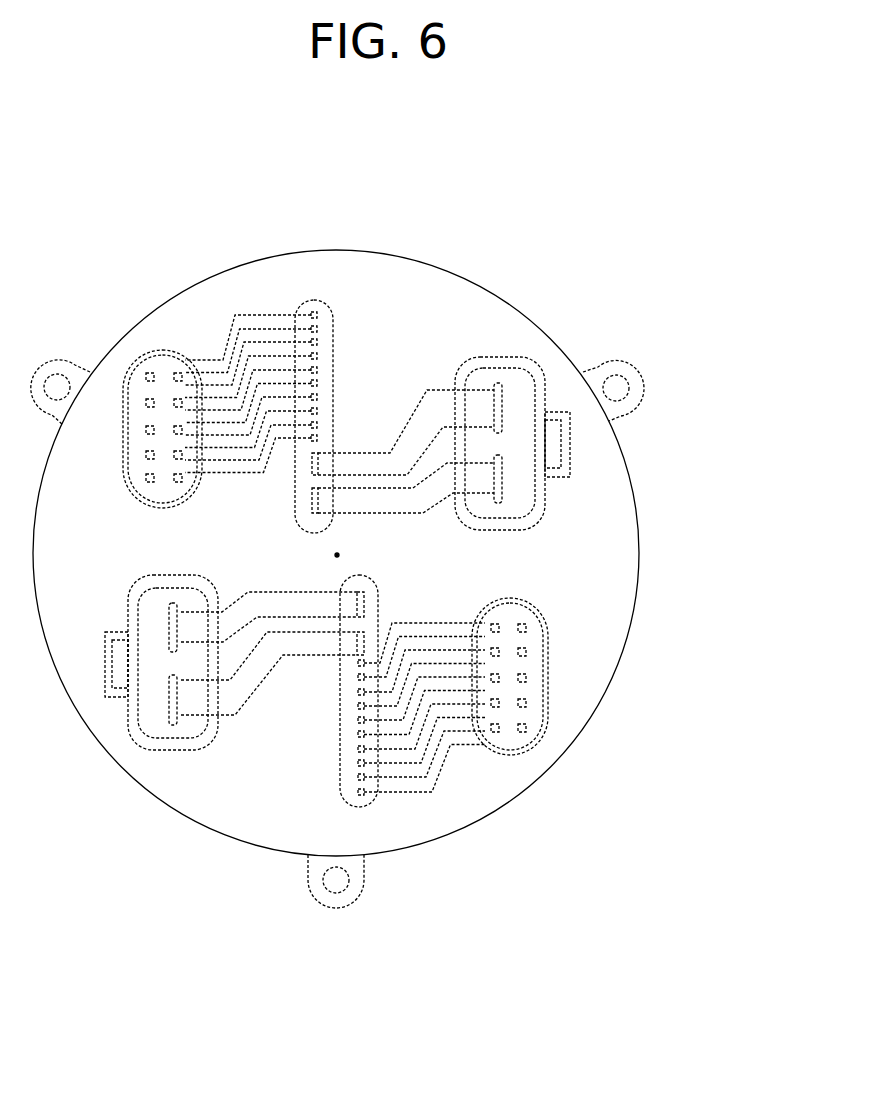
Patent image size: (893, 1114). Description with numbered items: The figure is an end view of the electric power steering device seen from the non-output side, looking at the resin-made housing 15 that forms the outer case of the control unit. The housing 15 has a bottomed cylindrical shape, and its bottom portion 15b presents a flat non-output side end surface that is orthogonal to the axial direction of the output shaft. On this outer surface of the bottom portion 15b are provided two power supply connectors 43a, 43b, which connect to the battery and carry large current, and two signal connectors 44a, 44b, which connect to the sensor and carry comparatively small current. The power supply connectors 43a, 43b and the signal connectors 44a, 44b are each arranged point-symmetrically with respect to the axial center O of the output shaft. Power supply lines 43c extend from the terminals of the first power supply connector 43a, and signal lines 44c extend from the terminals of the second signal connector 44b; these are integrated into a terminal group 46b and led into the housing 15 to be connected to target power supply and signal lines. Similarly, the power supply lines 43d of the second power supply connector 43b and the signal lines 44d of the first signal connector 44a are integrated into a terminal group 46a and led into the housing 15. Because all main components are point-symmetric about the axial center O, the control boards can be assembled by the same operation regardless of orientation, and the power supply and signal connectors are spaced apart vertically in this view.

The housing 15 is at (628, 475).
The bottom portion 15b is at (615, 562).
The axial center O is at (340, 555).
The power supply connector 43a is at (513, 356).
The power supply connector 43b is at (165, 749).
The power supply lines 43c is at (422, 413).
The power supply lines 43d is at (283, 657).
The signal connector 44a is at (545, 752).
The signal connector 44b is at (158, 348).
The signal lines 44c is at (273, 313).
The signal lines 44d is at (432, 792).
The terminal group 46a is at (358, 807).
The terminal group 46b is at (300, 312).